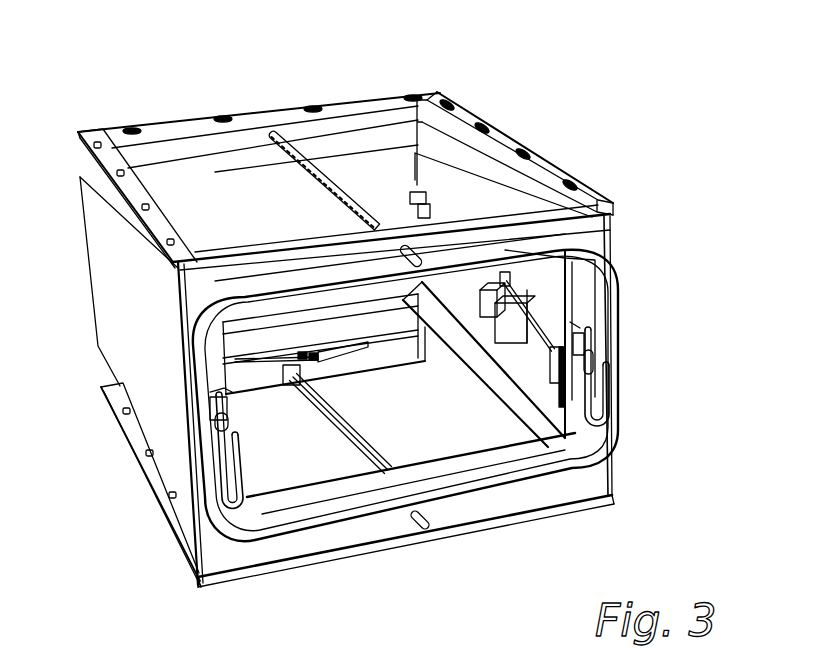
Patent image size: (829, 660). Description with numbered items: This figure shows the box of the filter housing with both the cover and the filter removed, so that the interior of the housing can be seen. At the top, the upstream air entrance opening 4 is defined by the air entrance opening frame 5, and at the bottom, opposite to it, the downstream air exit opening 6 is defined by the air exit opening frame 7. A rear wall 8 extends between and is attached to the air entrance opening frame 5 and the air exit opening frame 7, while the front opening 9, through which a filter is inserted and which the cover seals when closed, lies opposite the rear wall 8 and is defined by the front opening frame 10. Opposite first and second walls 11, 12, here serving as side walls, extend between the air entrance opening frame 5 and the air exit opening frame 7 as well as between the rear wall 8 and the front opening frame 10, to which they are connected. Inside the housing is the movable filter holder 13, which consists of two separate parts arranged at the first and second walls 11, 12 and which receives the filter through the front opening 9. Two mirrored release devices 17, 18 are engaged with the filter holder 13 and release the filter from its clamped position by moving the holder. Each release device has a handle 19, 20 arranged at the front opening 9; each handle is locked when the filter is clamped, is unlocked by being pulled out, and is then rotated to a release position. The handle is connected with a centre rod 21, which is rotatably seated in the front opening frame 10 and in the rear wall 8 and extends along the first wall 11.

The air entrance opening 4 is at (228, 192).
The air entrance opening frame 5 is at (108, 162).
The air exit opening 6 is at (300, 473).
The air exit opening frame 7 is at (160, 478).
The rear wall 8 is at (368, 163).
The front opening 9 is at (455, 442).
The front opening frame 10 is at (588, 307).
The first wall 11 is at (572, 272).
The second wall 12 is at (123, 308).
The movable filter holder 13 is at (513, 338).
The first release device 17 is at (537, 332).
The second release device 18 is at (251, 453).
The handle 19 is at (612, 403).
The handle 20 is at (200, 452).
The centre rod 21 is at (505, 300).